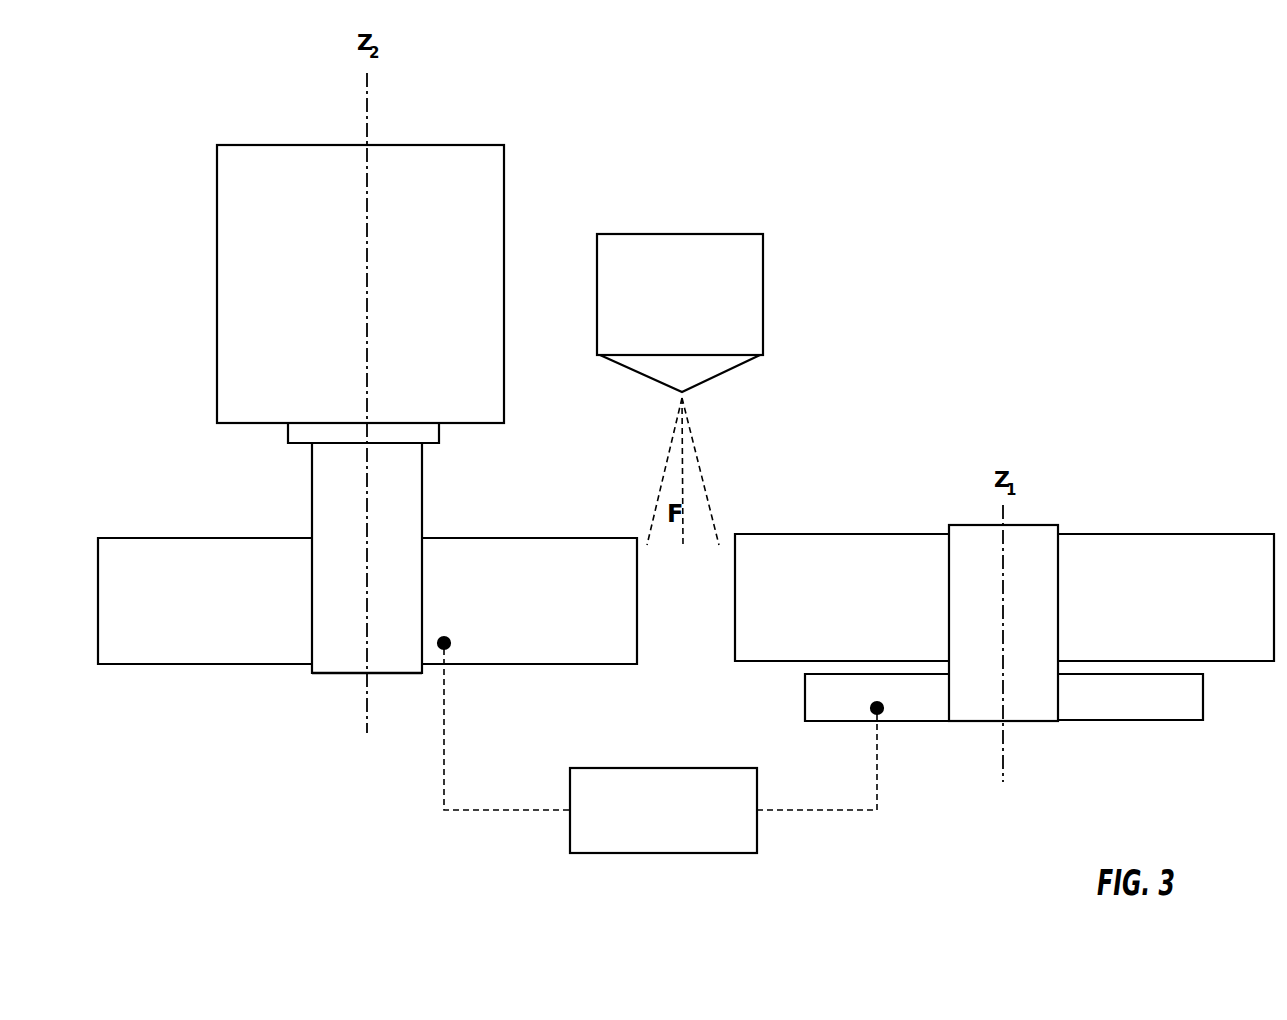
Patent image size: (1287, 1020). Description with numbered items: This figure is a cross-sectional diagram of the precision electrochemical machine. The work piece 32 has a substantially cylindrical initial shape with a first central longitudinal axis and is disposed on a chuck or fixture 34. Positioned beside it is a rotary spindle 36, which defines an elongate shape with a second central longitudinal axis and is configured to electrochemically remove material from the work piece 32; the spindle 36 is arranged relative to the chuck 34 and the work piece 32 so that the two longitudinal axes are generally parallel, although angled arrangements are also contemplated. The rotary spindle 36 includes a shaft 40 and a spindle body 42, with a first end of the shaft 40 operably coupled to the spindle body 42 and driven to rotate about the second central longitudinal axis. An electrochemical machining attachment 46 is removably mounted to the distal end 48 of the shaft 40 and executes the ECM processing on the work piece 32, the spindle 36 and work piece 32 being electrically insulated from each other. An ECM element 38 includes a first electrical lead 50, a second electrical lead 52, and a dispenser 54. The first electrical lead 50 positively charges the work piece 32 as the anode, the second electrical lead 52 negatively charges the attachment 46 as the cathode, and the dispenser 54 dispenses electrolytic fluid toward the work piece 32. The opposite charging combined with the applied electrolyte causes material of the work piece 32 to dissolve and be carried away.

The work piece 32 is at (1167, 548).
The chuck 34 is at (1133, 695).
The rotary spindle 36 is at (359, 447).
The ECM element 38 is at (663, 810).
The shaft 40 is at (412, 518).
The spindle body 42 is at (477, 220).
The ECM attachment 46 is at (202, 647).
The distal end 48 is at (334, 675).
The first electrical lead 50 is at (878, 783).
The second electrical lead 52 is at (443, 788).
The dispenser 54 is at (727, 372).